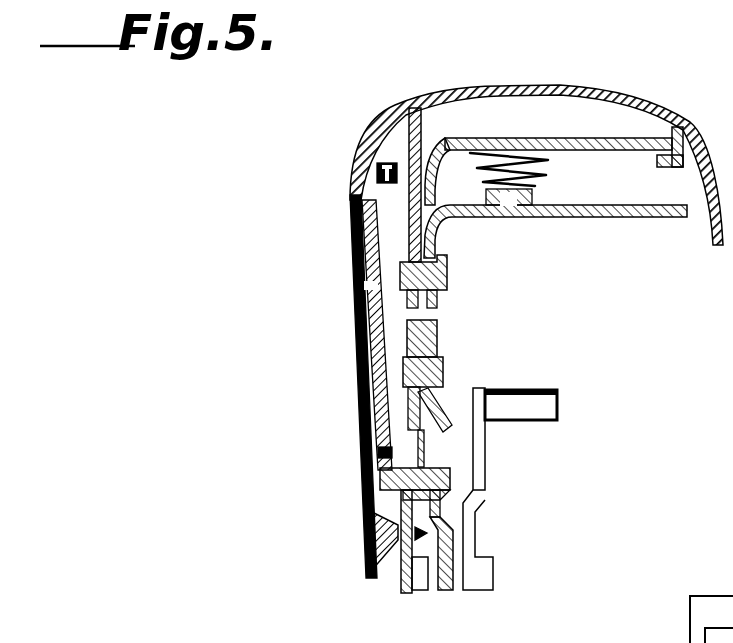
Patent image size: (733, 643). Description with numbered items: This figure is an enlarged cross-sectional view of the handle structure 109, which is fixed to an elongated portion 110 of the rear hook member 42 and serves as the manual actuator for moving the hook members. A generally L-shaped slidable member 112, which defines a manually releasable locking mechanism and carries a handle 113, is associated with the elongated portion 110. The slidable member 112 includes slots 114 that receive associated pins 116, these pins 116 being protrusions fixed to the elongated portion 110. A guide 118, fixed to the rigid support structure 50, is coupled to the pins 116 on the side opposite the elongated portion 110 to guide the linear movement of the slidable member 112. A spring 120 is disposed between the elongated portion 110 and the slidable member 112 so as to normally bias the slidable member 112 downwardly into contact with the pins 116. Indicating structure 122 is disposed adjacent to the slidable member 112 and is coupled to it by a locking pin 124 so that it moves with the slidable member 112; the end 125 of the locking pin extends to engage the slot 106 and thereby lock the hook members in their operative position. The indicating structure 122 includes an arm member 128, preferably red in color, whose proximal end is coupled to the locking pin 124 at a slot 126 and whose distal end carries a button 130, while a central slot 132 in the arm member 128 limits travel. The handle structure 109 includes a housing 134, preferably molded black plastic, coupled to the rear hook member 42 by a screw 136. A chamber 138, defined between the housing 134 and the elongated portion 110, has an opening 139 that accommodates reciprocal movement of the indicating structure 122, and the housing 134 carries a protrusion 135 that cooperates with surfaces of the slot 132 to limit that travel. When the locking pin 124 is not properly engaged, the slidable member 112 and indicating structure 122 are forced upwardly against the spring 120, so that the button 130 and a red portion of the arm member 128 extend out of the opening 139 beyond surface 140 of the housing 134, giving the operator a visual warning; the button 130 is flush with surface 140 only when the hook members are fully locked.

The rear hook member 42 is at (399, 582).
The rigid support structure 50 is at (547, 402).
The slot 106 is at (447, 490).
The handle structure 109 is at (661, 96).
The elongated portion 110 is at (422, 255).
The slidable member 112 is at (595, 217).
The handle 113 is at (651, 218).
The slots 114 is at (430, 410).
The pins 116 is at (380, 318).
The guide 118 is at (450, 395).
The spring 120 is at (537, 177).
The indicating structure 122 is at (377, 398).
The locking pin 124 is at (385, 478).
The end of locking pin 125 is at (450, 463).
The slot 126 is at (380, 455).
The arm member 128 is at (360, 217).
The button 130 is at (381, 140).
The slot 132 is at (357, 287).
The housing 134 is at (571, 83).
The protrusion 135 is at (367, 210).
The screw 136 is at (405, 532).
The chamber 138 is at (442, 133).
The opening 139 is at (417, 125).
The surface 140 is at (545, 66).